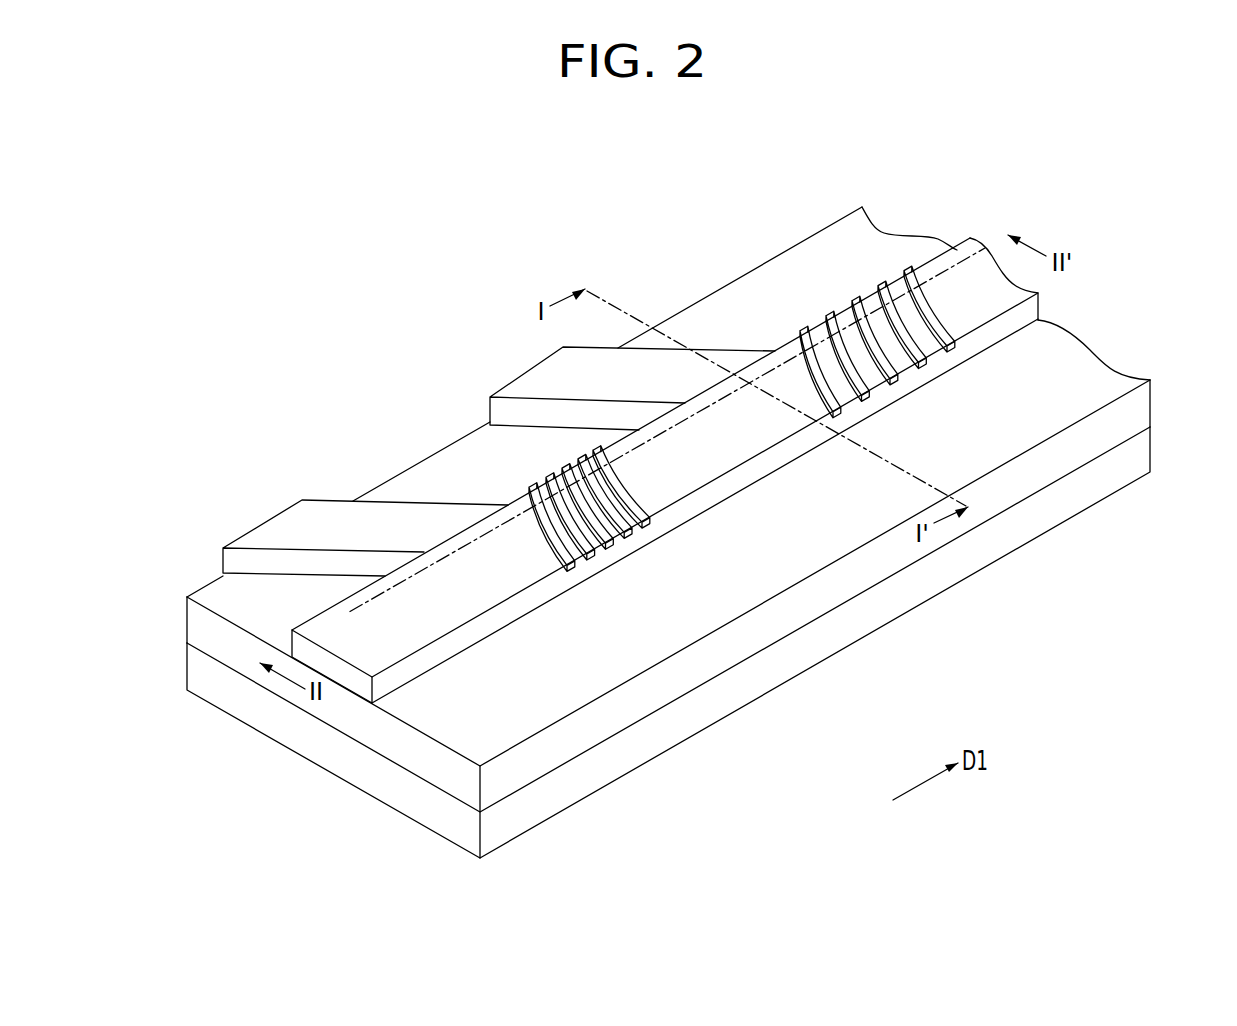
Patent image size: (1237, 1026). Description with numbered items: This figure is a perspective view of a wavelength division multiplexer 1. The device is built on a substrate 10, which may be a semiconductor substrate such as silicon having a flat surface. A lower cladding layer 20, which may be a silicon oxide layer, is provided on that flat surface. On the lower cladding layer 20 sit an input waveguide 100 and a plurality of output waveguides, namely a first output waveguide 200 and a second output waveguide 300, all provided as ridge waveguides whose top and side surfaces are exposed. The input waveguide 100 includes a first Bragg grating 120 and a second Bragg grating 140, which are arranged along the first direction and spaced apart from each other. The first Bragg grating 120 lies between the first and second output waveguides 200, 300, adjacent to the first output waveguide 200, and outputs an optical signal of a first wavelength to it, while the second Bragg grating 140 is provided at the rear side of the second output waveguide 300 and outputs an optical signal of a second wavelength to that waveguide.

The wavelength division multiplexer 1 is at (974, 145).
The substrate 10 is at (1143, 454).
The lower cladding layer 20 is at (1143, 405).
The input waveguide 100 is at (737, 470).
The first Bragg grating 120 is at (612, 555).
The second Bragg grating 140 is at (931, 371).
The first output waveguide 200 is at (256, 529).
The second output waveguide 300 is at (520, 374).